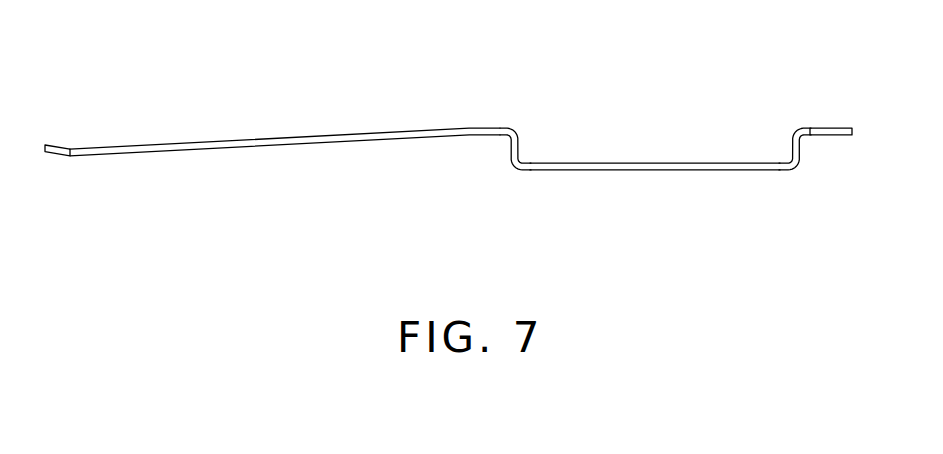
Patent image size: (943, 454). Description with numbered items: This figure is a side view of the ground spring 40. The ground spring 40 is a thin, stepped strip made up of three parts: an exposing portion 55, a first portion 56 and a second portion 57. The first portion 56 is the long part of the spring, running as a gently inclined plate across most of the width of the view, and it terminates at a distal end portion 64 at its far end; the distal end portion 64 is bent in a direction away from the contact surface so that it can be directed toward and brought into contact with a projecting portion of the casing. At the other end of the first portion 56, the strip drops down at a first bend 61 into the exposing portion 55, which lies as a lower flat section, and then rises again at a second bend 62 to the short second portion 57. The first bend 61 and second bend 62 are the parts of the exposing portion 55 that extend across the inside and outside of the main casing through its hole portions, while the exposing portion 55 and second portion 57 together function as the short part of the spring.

The ground spring 40 is at (241, 68).
The distal end portion 64 is at (60, 145).
The first portion 56 is at (351, 134).
The first bend 61 is at (510, 150).
The exposing portion 55 is at (680, 172).
The second bend 62 is at (800, 154).
The second portion 57 is at (830, 128).